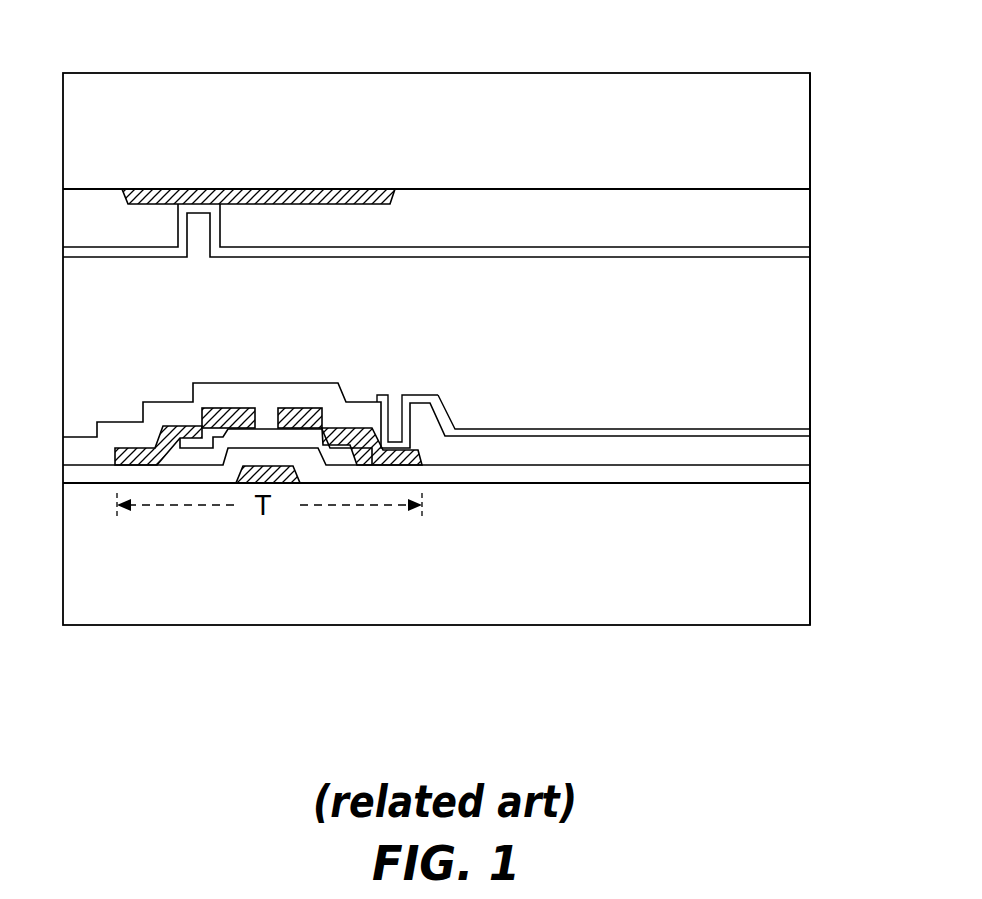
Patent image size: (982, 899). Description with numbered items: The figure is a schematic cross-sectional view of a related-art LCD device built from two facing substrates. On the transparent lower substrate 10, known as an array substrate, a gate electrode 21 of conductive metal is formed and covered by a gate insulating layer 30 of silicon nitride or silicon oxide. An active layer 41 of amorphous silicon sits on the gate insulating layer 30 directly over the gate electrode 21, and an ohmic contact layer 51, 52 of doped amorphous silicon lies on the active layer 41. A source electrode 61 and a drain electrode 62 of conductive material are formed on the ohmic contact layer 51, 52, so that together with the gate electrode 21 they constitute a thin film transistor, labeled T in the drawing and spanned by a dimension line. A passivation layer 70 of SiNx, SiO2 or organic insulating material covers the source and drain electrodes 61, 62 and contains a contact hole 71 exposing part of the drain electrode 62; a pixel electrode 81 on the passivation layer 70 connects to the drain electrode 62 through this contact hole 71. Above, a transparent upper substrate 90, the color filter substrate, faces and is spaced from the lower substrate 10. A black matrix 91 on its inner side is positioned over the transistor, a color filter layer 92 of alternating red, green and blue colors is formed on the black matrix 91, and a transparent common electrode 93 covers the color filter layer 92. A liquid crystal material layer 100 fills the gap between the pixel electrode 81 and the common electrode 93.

The lower substrate 10 is at (460, 598).
The gate electrode 21 is at (247, 484).
The gate insulating layer 30 is at (670, 475).
The active layer 41 is at (263, 440).
The ohmic contact layer 51 is at (202, 420).
The ohmic contact layer 52 is at (324, 407).
The source electrode 61 is at (217, 409).
The drain electrode 62 is at (298, 407).
The passivation layer 70 is at (118, 433).
The contact hole 71 is at (398, 386).
The pixel electrode 81 is at (504, 430).
The upper substrate 90 is at (346, 73).
The black matrix 91 is at (231, 188).
The color filter layer 92 is at (472, 208).
The common electrode 93 is at (629, 250).
The liquid crystal material layer 100 is at (777, 368).